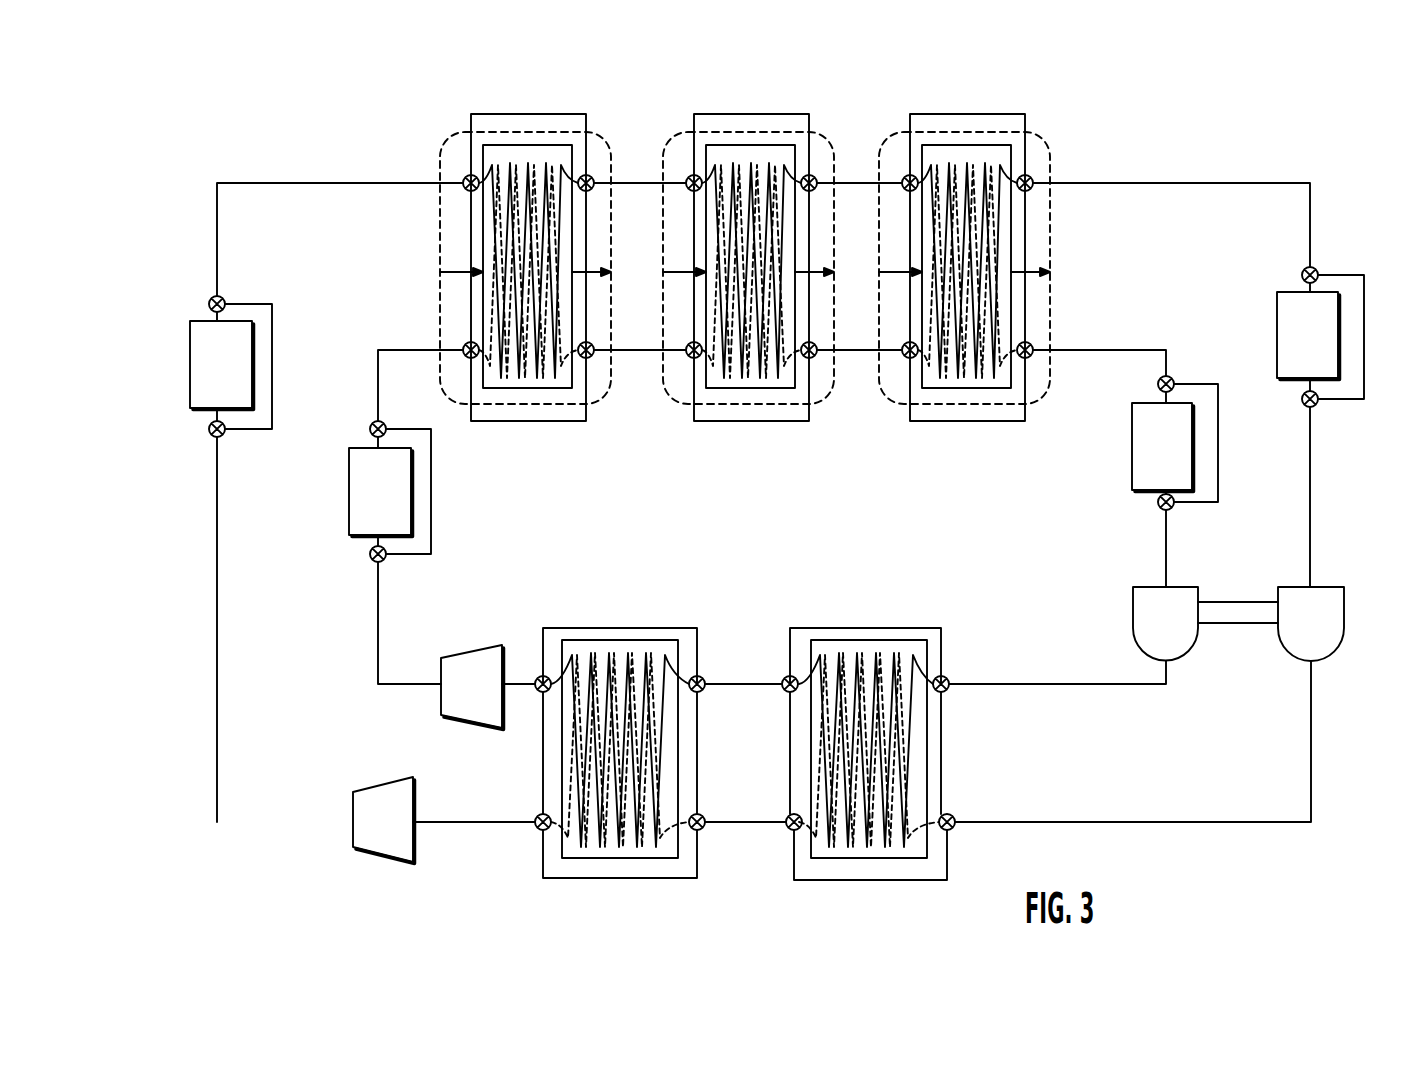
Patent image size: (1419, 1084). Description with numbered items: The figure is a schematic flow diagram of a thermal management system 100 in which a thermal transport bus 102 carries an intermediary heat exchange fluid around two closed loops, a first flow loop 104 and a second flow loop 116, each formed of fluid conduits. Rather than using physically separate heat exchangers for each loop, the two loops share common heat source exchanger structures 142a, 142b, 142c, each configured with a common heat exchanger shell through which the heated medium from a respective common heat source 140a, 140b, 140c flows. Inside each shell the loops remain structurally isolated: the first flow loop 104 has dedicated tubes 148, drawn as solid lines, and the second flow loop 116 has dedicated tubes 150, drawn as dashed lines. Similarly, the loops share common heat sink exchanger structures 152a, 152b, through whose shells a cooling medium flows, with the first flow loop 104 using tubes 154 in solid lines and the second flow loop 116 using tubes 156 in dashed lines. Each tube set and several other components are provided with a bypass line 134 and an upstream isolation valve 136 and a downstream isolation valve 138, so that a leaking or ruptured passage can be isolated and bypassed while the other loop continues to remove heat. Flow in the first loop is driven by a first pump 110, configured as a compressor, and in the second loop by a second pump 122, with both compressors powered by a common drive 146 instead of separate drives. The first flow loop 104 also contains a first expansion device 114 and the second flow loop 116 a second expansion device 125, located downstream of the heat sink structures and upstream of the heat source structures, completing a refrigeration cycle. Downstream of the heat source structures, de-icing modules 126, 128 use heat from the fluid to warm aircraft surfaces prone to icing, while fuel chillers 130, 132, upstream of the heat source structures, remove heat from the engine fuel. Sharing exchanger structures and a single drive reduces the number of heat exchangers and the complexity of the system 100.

The thermal management system 100 is at (1225, 148).
The thermal transport bus 102 is at (264, 183).
The first flow loop 104 is at (1113, 183).
The first pump 110 is at (1344, 626).
The first expansion device 114 is at (378, 790).
The second flow loop 116 is at (1108, 350).
The second pump 122 is at (1133, 627).
The second expansion device 125 is at (462, 652).
The de-icing module 126 is at (1277, 310).
The de-icing module 128 is at (1132, 420).
The fuel chiller 130 is at (190, 345).
The fuel chiller 132 is at (349, 506).
The bypass line 134 is at (272, 362).
The upstream isolation valve 136 is at (226, 435).
The downstream isolation valve 138 is at (221, 297).
The common heat source 140a is at (500, 292).
The common heat source 140b is at (742, 247).
The common heat source 140c is at (965, 254).
The common heat source exchanger structure 142a is at (505, 292).
The common heat source exchanger structure 142b is at (705, 232).
The common heat source exchanger structure 142c is at (920, 233).
The common drive 146 is at (1226, 624).
The tubes 148 is at (568, 172).
The tubes 150 is at (488, 362).
The common heat sink exchanger structure 152a is at (611, 745).
The common heat sink exchanger structure 152b is at (811, 745).
The tubes 154 is at (668, 662).
The tubes 156 is at (565, 838).